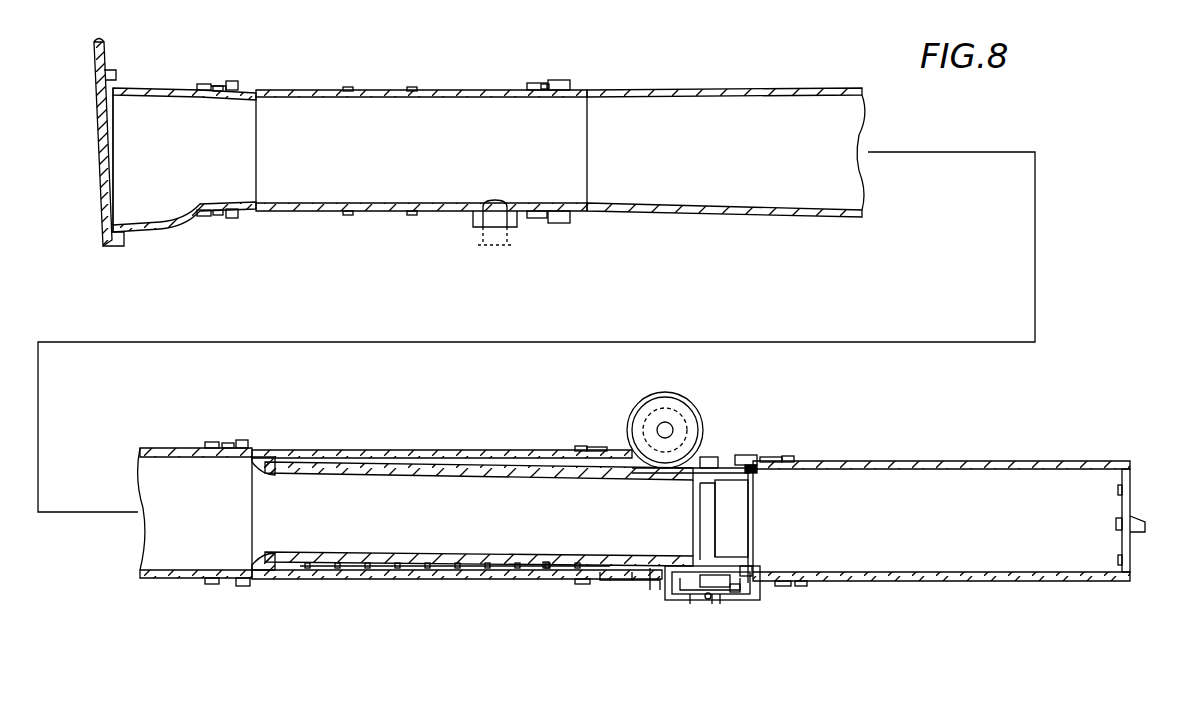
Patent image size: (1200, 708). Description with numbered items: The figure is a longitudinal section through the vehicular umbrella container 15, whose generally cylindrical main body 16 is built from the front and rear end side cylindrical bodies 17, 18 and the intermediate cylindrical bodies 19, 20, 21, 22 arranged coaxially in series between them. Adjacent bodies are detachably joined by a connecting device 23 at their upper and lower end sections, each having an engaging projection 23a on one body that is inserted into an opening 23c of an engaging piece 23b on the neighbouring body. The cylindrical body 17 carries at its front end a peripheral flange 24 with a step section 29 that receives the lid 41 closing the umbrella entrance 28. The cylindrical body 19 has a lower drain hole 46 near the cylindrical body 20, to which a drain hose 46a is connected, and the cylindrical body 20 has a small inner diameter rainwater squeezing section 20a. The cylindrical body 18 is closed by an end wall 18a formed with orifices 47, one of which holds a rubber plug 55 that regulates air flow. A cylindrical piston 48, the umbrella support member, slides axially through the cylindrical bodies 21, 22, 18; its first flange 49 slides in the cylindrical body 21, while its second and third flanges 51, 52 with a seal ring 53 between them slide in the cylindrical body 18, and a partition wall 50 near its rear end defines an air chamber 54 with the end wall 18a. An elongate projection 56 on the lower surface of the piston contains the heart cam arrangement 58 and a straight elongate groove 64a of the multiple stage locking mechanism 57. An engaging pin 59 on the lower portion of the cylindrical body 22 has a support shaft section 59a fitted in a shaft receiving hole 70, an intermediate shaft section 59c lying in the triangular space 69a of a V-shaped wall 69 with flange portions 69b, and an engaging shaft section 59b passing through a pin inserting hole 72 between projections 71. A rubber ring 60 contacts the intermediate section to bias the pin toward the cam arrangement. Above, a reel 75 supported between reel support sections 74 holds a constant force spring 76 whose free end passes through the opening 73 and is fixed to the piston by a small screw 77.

The umbrella container 15 is at (300, 86).
The umbrella container main body 16 is at (468, 88).
The front end side cylindrical body 17 is at (150, 233).
The rear end side cylindrical body 18 is at (885, 583).
The end wall 18a is at (1131, 506).
The intermediate cylindrical body 19 is at (312, 212).
The intermediate cylindrical body 20 is at (828, 88).
The rainwater squeezing section 20a is at (632, 88).
The intermediate cylindrical body 21 is at (395, 580).
The intermediate cylindrical body 22 is at (660, 580).
The connecting device 23 is at (222, 80).
The engaging projection 23a is at (217, 84).
The engaging piece 23b is at (198, 85).
The opening 23c is at (238, 82).
The flange 24 is at (106, 46).
The umbrella entrance 28 is at (125, 208).
The step section 29 is at (116, 96).
The lid 41 is at (97, 172).
The drain hole 46 is at (474, 222).
The drain hose 46a is at (485, 247).
The orifices 47 is at (1128, 491).
The cylindrical piston 48 is at (413, 476).
The first flange 49 is at (258, 471).
The partition wall 50 is at (704, 500).
The second flange 51 is at (735, 482).
The third flange 52 is at (758, 472).
The seal ring 53 is at (753, 476).
The air chamber 54 is at (915, 530).
The rubber plug 55 is at (1145, 528).
The elongate projection 56 is at (355, 567).
The multiple stage locking mechanism 57 is at (740, 600).
The multiple stage heart cam arrangement 58 is at (545, 569).
The engaging pin 59 is at (700, 603).
The support shaft section 59a is at (672, 592).
The engaging shaft section 59b is at (752, 570).
The intermediate shaft section 59c is at (690, 604).
The rubber ring 60 is at (709, 600).
The straight elongate groove 64a is at (606, 570).
The V-shaped wall 69 is at (680, 598).
The triangular space 69a is at (700, 575).
The flange portions 69b is at (712, 605).
The shaft receiving hole 70 is at (651, 568).
The projections 71 is at (721, 604).
The pin inserting hole 72 is at (741, 590).
The opening 73 is at (743, 456).
The reel support sections 74 is at (690, 421).
The reel 75 is at (642, 411).
The constant force spring 76 is at (642, 470).
The small screw 77 is at (708, 460).